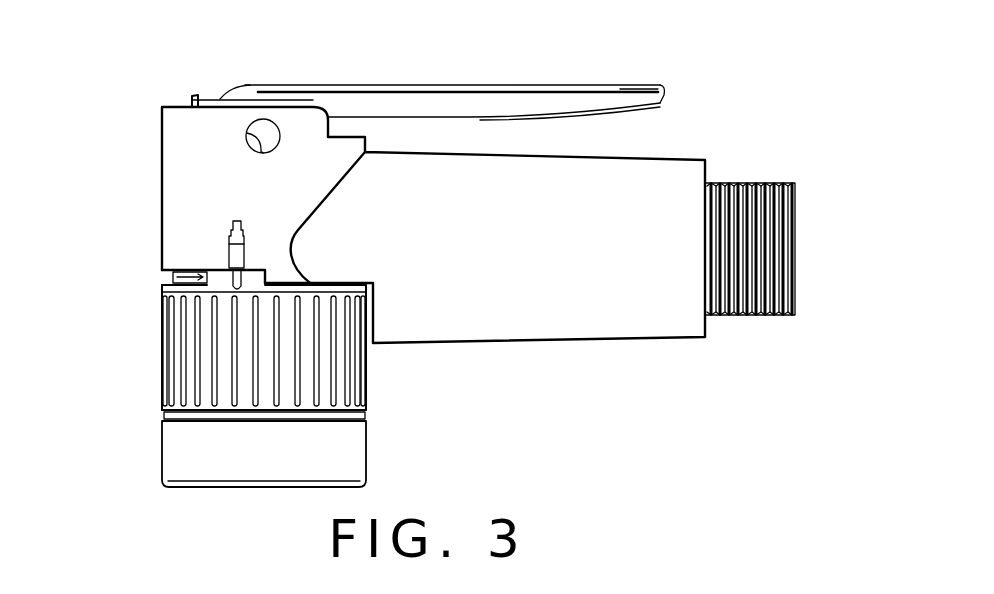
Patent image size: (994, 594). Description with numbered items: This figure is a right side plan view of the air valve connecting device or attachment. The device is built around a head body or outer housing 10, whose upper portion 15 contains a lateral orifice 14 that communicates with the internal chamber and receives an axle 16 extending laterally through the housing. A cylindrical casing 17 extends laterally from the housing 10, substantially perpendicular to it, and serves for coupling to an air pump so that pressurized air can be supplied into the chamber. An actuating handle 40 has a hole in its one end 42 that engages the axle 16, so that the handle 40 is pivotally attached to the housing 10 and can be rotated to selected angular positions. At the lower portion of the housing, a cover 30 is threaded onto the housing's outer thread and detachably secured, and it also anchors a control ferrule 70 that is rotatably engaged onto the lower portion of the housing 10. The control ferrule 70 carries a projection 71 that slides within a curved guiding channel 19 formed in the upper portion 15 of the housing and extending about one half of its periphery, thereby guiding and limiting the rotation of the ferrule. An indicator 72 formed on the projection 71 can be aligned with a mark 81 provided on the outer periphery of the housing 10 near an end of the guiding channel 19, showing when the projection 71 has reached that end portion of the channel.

The head body or outer housing 10 is at (190, 130).
The lateral orifice 14 is at (262, 152).
The upper portion 15 is at (185, 100).
The axle 16 is at (270, 130).
The cylindrical casing 17 is at (655, 310).
The guiding channel 19 is at (163, 272).
The cover 30 is at (342, 450).
The actuating handle 40 is at (573, 92).
The one end 42 is at (237, 97).
The control ferrule 70 is at (192, 363).
The projection 71 is at (262, 285).
The indicator 72 is at (233, 284).
The mark 81 is at (230, 252).